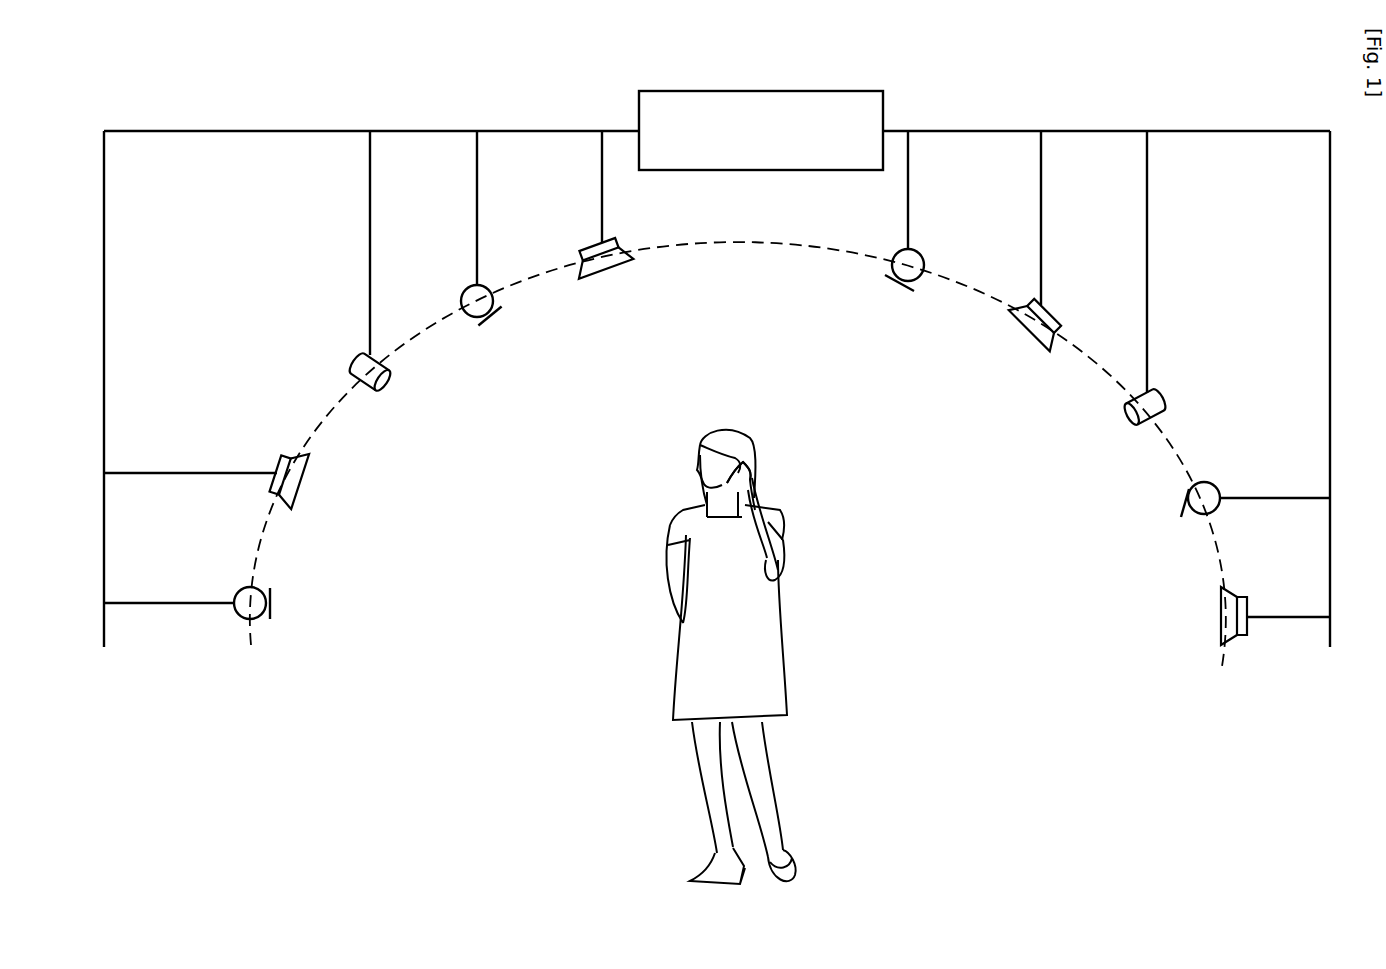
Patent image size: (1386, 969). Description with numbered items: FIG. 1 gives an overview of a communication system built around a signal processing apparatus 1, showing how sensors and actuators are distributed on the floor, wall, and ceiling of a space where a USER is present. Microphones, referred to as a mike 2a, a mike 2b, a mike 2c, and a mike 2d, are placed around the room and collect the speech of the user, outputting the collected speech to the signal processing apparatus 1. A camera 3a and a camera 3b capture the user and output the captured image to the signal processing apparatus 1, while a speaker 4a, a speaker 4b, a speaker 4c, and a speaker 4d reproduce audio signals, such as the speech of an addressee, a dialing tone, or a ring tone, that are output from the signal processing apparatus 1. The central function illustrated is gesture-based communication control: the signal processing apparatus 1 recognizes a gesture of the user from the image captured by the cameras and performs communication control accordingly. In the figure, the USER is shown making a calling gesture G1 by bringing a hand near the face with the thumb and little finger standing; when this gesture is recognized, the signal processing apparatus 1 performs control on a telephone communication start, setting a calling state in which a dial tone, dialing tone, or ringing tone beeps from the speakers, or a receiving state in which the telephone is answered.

The signal processing apparatus 1 is at (761, 91).
The mike 2a is at (471, 286).
The mike 2b is at (236, 593).
The mike 2c is at (923, 256).
The mike 2d is at (1222, 491).
The camera 3a is at (356, 371).
The camera 3b is at (1170, 405).
The speaker 4a is at (592, 245).
The speaker 4b is at (276, 465).
The speaker 4c is at (1062, 312).
The speaker 4d is at (1247, 600).
The user USER is at (757, 432).
The calling gesture G1 is at (780, 484).